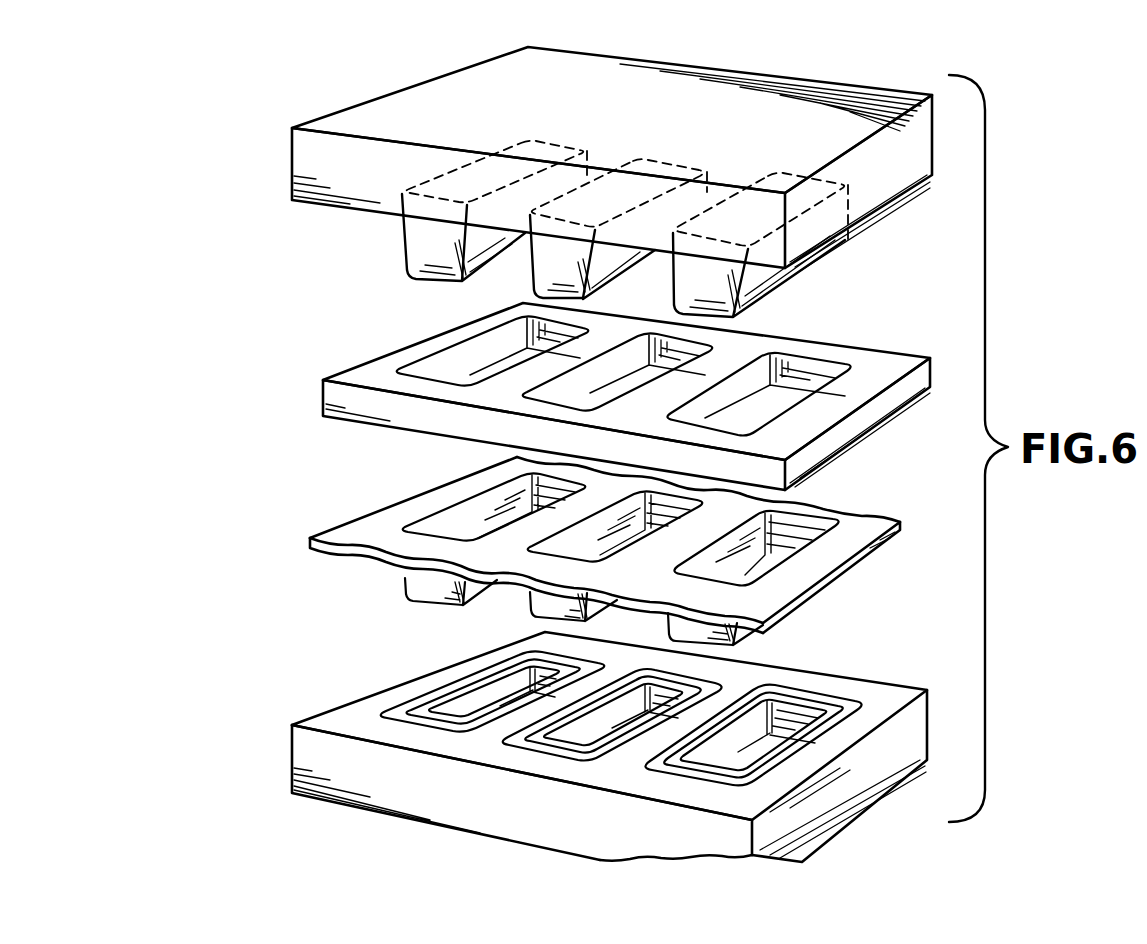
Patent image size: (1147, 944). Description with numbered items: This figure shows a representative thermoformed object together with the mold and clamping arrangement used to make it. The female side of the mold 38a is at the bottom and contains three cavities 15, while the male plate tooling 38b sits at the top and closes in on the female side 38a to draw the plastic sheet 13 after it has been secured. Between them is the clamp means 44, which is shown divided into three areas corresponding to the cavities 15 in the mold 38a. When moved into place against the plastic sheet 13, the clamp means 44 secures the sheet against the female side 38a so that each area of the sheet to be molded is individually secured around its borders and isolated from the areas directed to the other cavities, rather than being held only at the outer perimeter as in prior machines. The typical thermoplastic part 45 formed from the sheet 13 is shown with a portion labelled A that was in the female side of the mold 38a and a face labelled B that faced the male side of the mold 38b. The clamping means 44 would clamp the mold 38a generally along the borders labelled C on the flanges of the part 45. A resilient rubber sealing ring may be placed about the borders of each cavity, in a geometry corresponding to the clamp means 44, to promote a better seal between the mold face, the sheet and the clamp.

The male plate tooling 38b is at (292, 166).
The clamp means 44 is at (323, 392).
The plastic sheet 13 is at (353, 527).
The face of the part B is at (383, 547).
The portion of the part A is at (413, 600).
The borders on the flanges C is at (793, 560).
The female side of the mold 38a is at (296, 758).
The cavities 15 is at (432, 708).
The thermoplastic part 45 is at (852, 700).